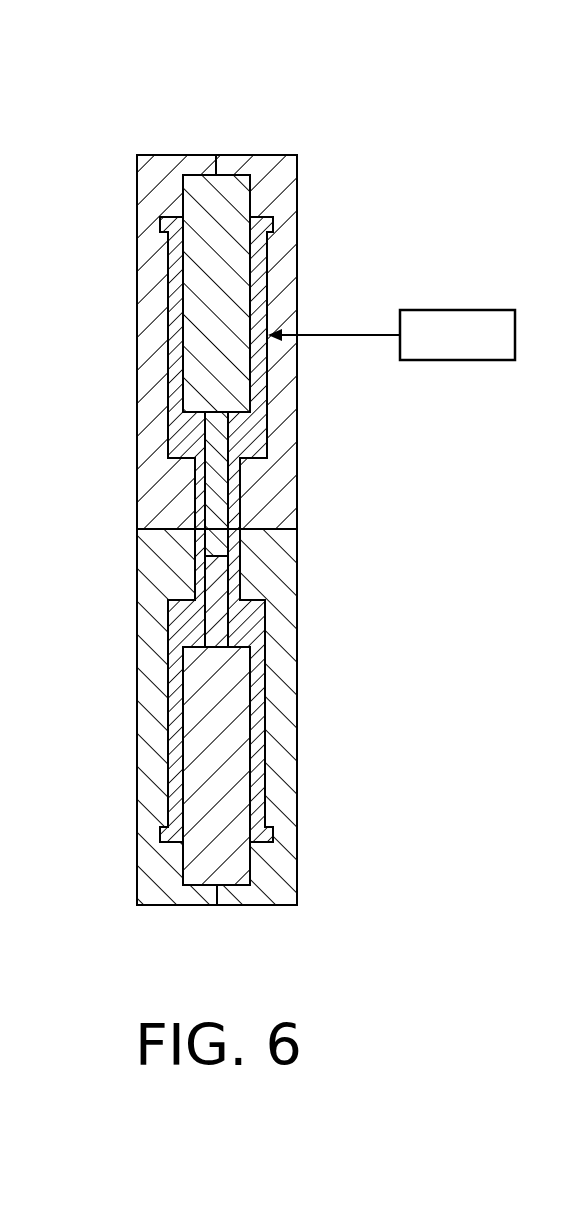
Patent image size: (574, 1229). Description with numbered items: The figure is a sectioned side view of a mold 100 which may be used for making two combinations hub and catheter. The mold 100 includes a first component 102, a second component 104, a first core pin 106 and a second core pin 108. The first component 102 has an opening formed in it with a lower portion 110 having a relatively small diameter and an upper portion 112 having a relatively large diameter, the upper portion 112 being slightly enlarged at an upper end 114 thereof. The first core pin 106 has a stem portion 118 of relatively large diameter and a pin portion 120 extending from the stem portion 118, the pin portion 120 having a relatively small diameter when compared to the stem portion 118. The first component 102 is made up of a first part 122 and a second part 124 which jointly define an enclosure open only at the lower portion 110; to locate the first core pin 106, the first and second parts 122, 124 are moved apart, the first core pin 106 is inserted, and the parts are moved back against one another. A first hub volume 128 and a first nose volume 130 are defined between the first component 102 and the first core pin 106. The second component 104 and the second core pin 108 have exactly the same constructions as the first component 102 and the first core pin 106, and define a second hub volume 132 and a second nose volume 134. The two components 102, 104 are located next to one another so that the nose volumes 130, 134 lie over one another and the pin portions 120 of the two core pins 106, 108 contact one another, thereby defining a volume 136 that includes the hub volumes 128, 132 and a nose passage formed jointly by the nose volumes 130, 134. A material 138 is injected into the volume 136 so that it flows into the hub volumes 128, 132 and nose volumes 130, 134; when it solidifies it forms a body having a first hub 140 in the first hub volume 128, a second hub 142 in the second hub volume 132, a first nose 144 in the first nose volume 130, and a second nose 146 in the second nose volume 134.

The mold 100 is at (93, 90).
The first component 102 is at (302, 240).
The second component 104 is at (302, 618).
The first core pin 106 is at (280, 399).
The second core pin 108 is at (228, 705).
The lower portion 110 is at (243, 476).
The upper portion 112 is at (258, 278).
The upper end 114 is at (268, 226).
The stem portion 118 is at (227, 199).
The pin portion 120 is at (217, 434).
The first part 122 is at (164, 155).
The second part 124 is at (258, 155).
The first hub volume 128 is at (258, 305).
The first nose volume 130 is at (256, 490).
The second hub volume 132 is at (262, 664).
The second nose volume 134 is at (265, 527).
The volume 136 is at (262, 598).
The material 138 is at (472, 310).
The first hub 140 is at (175, 315).
The second hub 142 is at (173, 762).
The first nose 144 is at (202, 498).
The second nose 146 is at (202, 568).